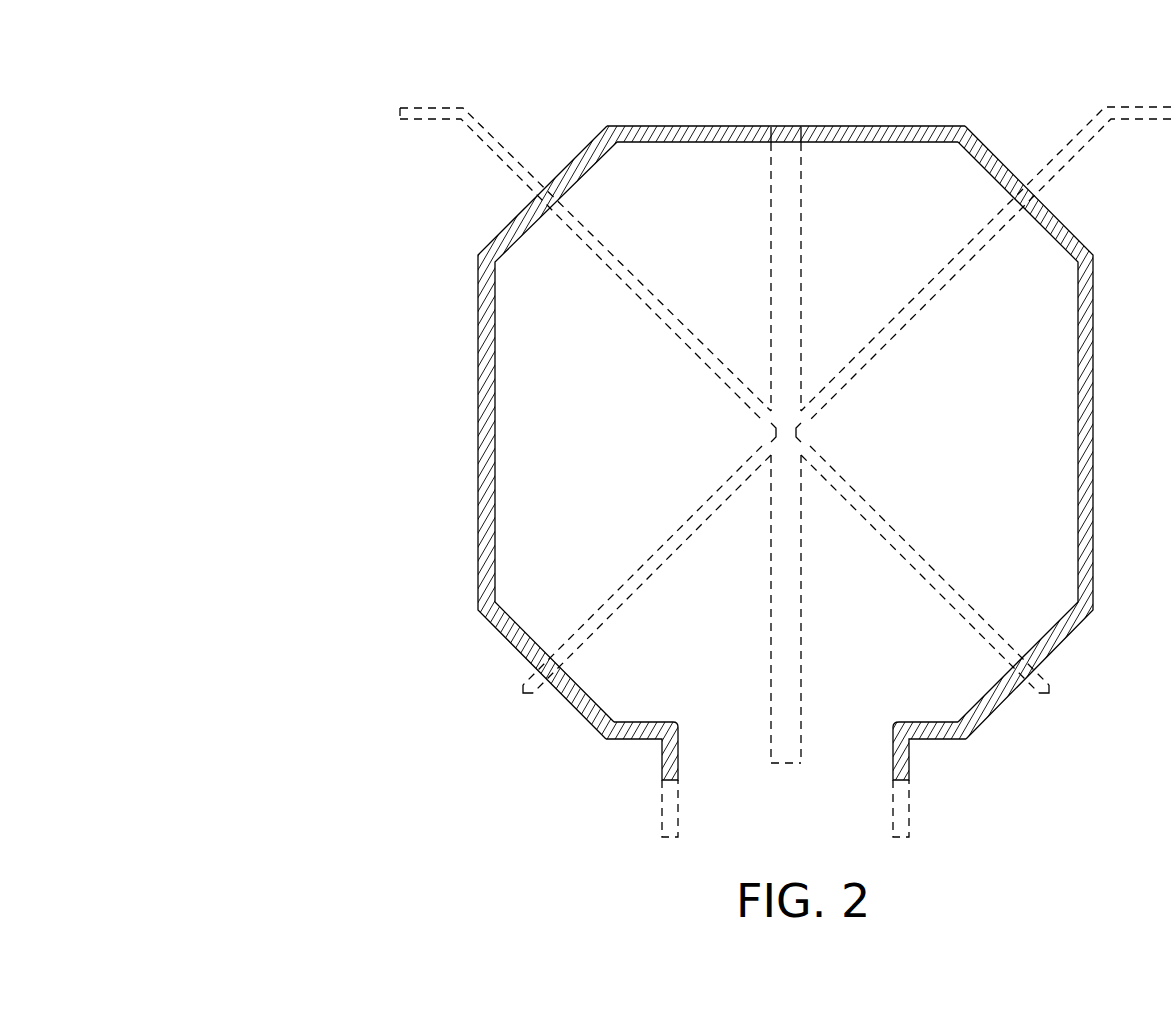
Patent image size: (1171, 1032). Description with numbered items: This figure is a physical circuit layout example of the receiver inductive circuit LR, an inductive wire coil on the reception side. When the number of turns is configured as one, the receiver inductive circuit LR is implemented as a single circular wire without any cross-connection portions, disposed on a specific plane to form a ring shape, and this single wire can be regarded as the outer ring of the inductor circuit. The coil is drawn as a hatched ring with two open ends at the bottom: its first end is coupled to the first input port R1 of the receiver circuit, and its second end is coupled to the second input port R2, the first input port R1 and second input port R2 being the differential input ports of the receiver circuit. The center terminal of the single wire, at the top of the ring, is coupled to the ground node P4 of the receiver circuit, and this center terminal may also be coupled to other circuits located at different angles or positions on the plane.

The receiver inductive circuit LR is at (266, 78).
The ground node P4 is at (787, 464).
The first input port R1 is at (904, 828).
The second input port R2 is at (669, 828).